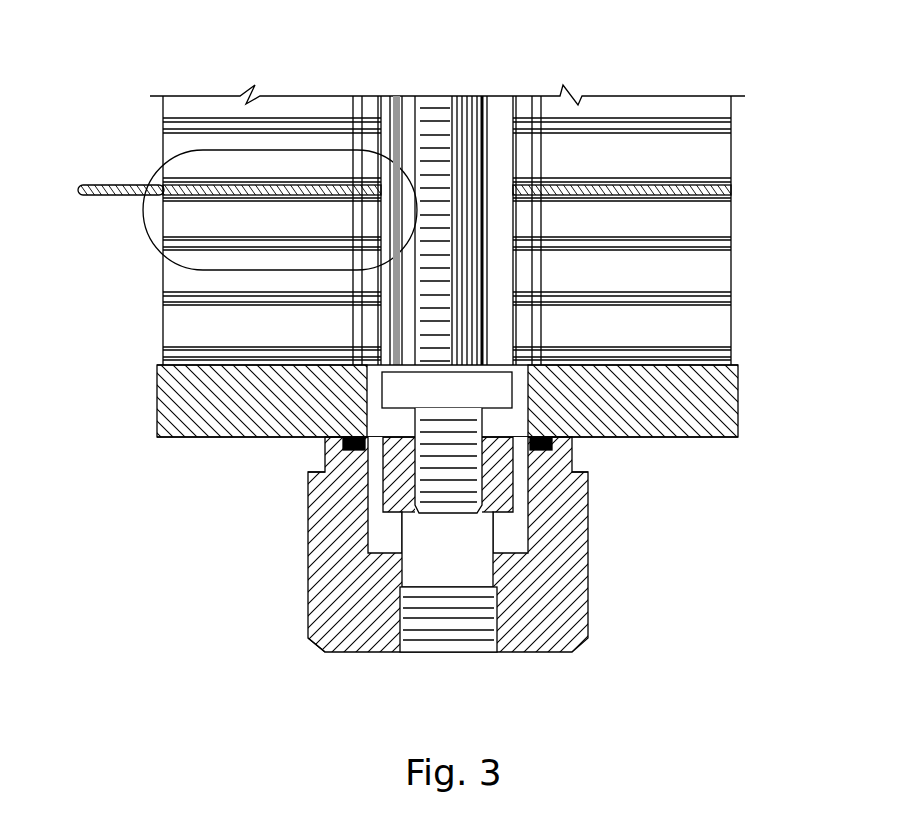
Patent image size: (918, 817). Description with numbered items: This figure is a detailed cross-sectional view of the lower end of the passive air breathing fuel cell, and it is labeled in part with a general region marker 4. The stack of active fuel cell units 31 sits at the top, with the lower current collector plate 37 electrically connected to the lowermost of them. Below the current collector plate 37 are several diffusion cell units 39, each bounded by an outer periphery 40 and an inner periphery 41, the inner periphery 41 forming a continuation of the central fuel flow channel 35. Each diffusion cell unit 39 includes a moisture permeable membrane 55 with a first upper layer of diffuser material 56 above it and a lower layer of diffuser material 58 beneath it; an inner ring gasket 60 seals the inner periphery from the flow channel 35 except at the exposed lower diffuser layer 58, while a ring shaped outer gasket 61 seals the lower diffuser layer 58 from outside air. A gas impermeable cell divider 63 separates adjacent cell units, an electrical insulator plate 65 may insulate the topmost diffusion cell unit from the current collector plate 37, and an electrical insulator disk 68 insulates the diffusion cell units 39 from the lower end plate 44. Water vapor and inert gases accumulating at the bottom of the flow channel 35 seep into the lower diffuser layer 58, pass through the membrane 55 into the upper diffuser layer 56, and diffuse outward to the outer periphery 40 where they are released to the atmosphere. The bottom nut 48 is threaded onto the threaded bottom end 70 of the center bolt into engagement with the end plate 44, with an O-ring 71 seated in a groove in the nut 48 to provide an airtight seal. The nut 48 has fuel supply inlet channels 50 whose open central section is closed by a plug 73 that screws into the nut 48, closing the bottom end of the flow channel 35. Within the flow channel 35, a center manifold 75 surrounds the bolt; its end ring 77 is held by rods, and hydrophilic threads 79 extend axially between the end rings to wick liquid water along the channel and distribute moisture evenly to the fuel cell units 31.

The cell unit 4 is at (147, 235).
The fuel cell units 31 is at (722, 158).
The fuel flow channel 35 is at (495, 132).
The lower current collector plate 37 is at (135, 190).
The diffusion cell units 39 is at (733, 208).
The outer periphery 40 is at (732, 327).
The inner periphery 41 is at (556, 362).
The lower end plate 44 is at (233, 437).
The lower nut 48 is at (577, 648).
The fuel supply inlet channels 50 is at (465, 547).
The moisture permeable membrane 55 is at (733, 240).
The first upper layer of diffuser material 56 is at (733, 233).
The lower layer of diffuser material 58 is at (657, 243).
The inner ring gasket 60 is at (535, 143).
The outer gasket 61 is at (733, 243).
The cell divider 63 is at (733, 252).
The electrical insulator plate 65 is at (162, 196).
The electrical insulator disk 68 is at (148, 362).
The threaded bottom end 70 is at (347, 642).
The O-ring 71 is at (307, 487).
The plug 73 is at (453, 652).
The center manifold 75 is at (463, 350).
The end ring 77 is at (588, 480).
The hydrophilic threads 79 is at (465, 98).